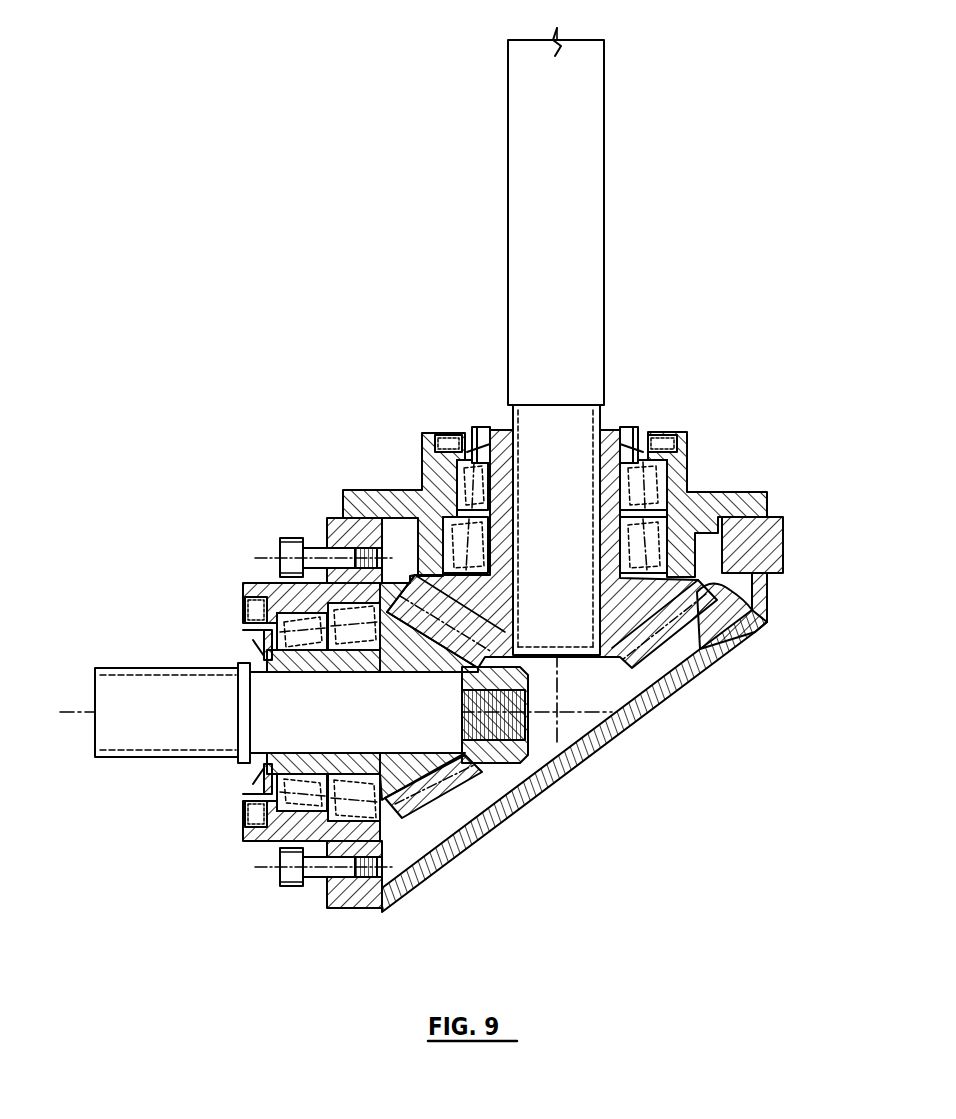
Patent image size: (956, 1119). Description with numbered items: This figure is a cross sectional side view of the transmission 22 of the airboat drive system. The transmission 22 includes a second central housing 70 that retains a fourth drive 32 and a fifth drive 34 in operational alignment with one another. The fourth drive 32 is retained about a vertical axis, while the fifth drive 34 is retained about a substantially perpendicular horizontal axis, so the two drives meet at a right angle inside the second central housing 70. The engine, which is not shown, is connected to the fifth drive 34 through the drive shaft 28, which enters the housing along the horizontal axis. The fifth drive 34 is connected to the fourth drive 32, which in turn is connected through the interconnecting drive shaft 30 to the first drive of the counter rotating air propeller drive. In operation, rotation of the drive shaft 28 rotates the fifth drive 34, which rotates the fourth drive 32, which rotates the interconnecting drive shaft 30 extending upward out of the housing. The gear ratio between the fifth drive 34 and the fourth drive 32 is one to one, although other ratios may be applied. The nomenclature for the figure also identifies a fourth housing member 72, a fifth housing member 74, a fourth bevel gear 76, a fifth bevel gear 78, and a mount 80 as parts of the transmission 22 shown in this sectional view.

The transmission 22 is at (293, 450).
The drive shaft 28 is at (120, 668).
The interconnecting drive shaft 30 is at (605, 190).
The fourth drive 32 is at (731, 467).
The fifth drive 34 is at (211, 826).
The second central housing 70 is at (578, 770).
The fourth housing member 72 is at (694, 456).
The fifth housing member 74 is at (266, 843).
The fourth bevel gear 76 is at (758, 621).
The fifth bevel gear 78 is at (388, 810).
The mount 80 is at (409, 757).